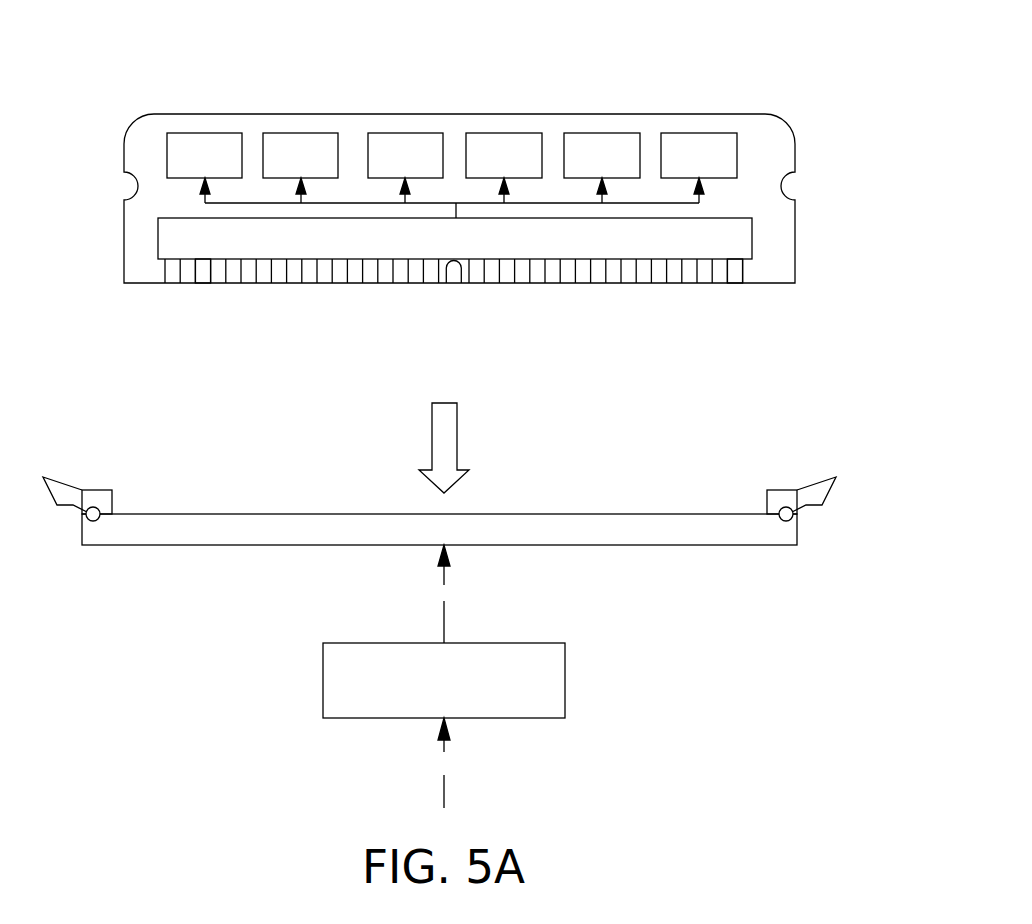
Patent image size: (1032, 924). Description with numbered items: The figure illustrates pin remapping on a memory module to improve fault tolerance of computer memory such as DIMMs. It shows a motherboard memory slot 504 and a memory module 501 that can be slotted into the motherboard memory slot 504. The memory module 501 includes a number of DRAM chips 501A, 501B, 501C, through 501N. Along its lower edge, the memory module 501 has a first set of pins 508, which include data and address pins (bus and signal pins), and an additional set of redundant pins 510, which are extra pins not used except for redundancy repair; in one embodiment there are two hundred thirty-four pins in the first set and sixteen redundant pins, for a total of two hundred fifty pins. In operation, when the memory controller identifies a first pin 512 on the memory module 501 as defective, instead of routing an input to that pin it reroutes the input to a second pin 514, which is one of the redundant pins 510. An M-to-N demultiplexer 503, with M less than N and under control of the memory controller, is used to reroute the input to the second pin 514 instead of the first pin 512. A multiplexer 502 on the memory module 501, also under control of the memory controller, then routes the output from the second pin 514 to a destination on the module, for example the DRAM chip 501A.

The memory module 501 is at (513, 197).
The DRAM chip 501A is at (224, 155).
The DRAM chip 501B is at (320, 155).
The DRAM chip 501C is at (425, 155).
The DRAM chip 501N is at (718, 155).
The multiplexer 502 is at (547, 247).
The M-to-N demultiplexer 503 is at (462, 677).
The motherboard memory slot 504 is at (650, 583).
The first set of pins 508 is at (655, 295).
The redundant pins 510 is at (812, 357).
The first pin 512 is at (203, 284).
The second pin 514 is at (752, 258).